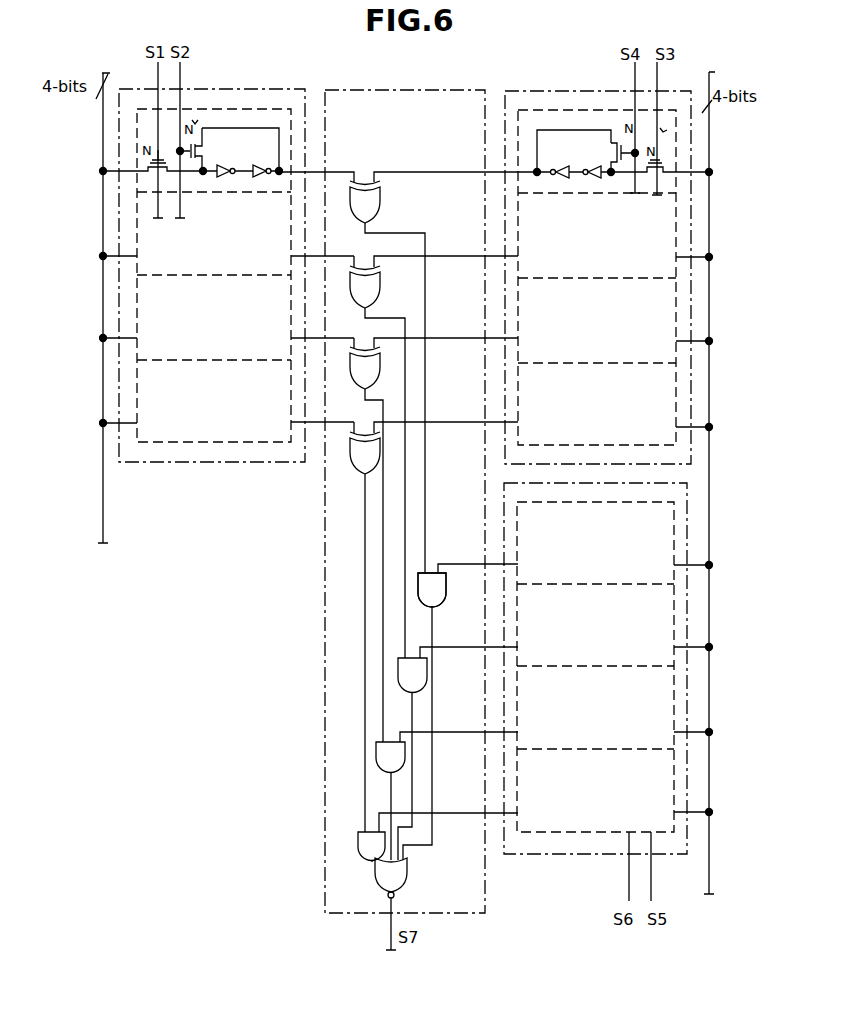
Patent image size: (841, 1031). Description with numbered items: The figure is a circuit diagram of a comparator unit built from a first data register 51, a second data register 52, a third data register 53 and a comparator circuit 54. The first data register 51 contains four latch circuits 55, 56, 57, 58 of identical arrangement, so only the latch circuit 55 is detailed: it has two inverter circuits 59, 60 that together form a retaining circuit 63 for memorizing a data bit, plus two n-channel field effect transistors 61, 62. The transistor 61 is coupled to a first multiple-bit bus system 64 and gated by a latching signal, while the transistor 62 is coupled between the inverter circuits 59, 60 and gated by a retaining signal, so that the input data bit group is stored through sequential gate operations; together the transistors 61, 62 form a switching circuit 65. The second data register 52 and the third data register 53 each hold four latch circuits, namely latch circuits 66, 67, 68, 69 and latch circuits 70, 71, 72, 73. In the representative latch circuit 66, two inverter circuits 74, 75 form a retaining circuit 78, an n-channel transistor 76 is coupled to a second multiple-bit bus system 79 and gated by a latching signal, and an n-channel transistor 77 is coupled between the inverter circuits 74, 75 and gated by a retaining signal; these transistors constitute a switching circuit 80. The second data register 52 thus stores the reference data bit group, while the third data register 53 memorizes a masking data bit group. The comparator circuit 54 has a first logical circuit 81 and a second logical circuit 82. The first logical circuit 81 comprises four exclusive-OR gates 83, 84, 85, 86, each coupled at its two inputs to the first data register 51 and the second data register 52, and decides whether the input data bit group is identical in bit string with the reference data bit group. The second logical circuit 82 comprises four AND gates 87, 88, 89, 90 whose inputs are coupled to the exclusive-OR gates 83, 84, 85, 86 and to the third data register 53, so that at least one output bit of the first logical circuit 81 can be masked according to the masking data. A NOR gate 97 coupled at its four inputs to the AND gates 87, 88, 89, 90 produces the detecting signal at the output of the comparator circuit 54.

The first data register 51 is at (293, 88).
The second data register 52 is at (584, 91).
The third data register 53 is at (538, 855).
The comparator circuit 54 is at (402, 89).
The latch circuit 55 is at (270, 108).
The latch circuit 56 is at (277, 271).
The latch circuit 57 is at (277, 352).
The latch circuit 58 is at (277, 436).
The inverter circuit 59 is at (230, 178).
The inverter circuit 60 is at (258, 166).
The n-channel type field effect transistor 61 is at (162, 162).
The n-channel type field effect transistor 62 is at (205, 158).
The retaining circuit 63 is at (240, 127).
The first multiple-bit bus system 64 is at (103, 322).
The switching circuit 65 is at (196, 122).
The latch circuit 66 is at (678, 141).
The latch circuit 67 is at (659, 267).
The latch circuit 68 is at (659, 357).
The latch circuit 69 is at (659, 434).
The latch circuit 70 is at (657, 579).
The latch circuit 71 is at (659, 659).
The latch circuit 72 is at (659, 741).
The latch circuit 73 is at (660, 822).
The inverter circuit 74 is at (590, 166).
The inverter circuit 75 is at (556, 166).
The n-channel type field effect transistor 76 is at (668, 162).
The n-channel type field effect transistor 77 is at (611, 143).
The retaining circuit 78 is at (546, 123).
The second multiple-bit bus system 79 is at (709, 236).
The switching circuit 80 is at (665, 130).
The first logical circuit 81 is at (391, 166).
The second logical circuit 82 is at (444, 559).
The exclusive-OR gate 83 is at (381, 200).
The exclusive-OR gate 84 is at (381, 288).
The exclusive-OR gate 85 is at (356, 383).
The exclusive-OR gate 86 is at (357, 471).
The AND gate 87 is at (446, 600).
The AND gate 88 is at (405, 684).
The AND gate 89 is at (388, 772).
The AND gate 90 is at (360, 831).
The NOR gate 97 is at (407, 886).